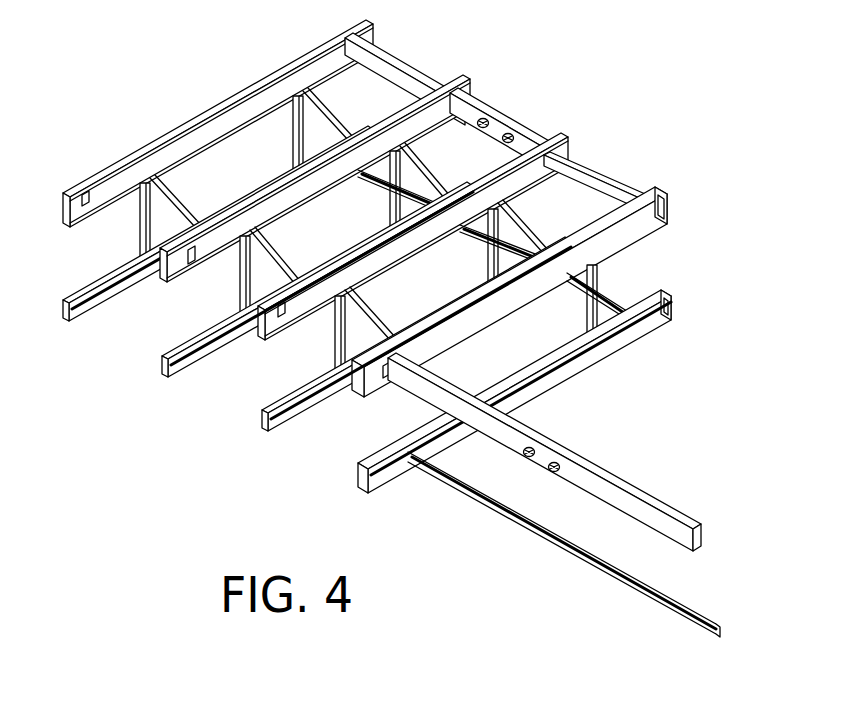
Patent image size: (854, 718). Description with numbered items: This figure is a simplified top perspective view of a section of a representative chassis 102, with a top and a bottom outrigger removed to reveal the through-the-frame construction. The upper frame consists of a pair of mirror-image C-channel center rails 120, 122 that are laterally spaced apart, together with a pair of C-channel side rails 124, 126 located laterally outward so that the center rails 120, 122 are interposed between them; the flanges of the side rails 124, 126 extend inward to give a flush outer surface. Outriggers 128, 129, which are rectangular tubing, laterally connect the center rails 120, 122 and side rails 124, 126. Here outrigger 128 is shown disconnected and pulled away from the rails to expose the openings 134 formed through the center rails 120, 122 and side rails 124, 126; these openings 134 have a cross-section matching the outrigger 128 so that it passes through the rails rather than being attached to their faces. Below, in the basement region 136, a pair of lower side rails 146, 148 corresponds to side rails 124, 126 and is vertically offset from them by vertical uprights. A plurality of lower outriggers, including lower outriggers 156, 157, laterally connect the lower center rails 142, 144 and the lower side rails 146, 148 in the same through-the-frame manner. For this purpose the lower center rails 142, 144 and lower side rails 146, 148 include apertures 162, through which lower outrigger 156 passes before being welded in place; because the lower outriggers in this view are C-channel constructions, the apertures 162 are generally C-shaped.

The chassis 102 is at (150, 82).
The center rail 120 is at (543, 147).
The center rail 122 is at (430, 97).
The side rail 124 is at (665, 210).
The side rail 126 is at (312, 60).
The outrigger 128 is at (664, 512).
The outrigger 129 is at (607, 178).
The openings 134 is at (80, 246).
The basement region 136 is at (586, 396).
The lower center rail 142 is at (283, 420).
The lower center rail 144 is at (182, 365).
The lower side rail 146 is at (621, 338).
The lower side rail 148 is at (86, 313).
The lower outrigger 156 is at (584, 569).
The lower outrigger 157 is at (618, 297).
The apertures 162 is at (207, 380).